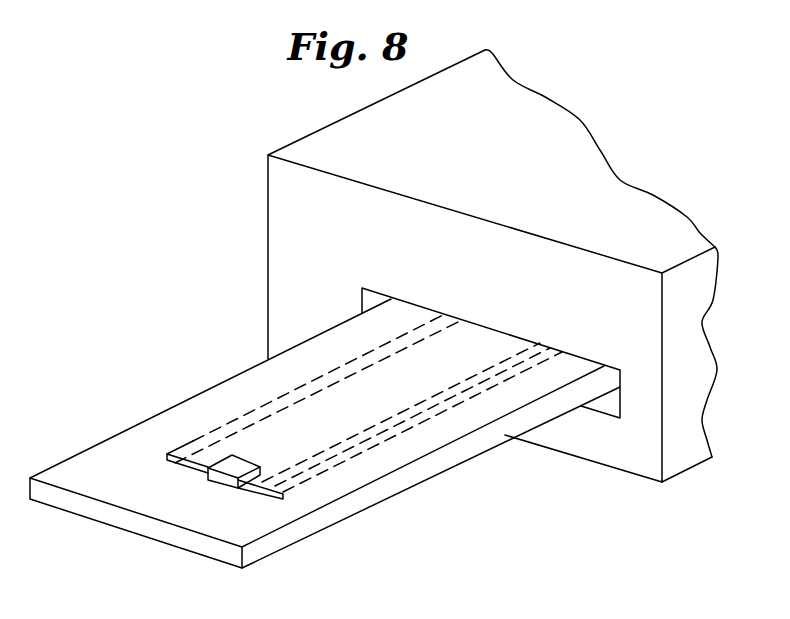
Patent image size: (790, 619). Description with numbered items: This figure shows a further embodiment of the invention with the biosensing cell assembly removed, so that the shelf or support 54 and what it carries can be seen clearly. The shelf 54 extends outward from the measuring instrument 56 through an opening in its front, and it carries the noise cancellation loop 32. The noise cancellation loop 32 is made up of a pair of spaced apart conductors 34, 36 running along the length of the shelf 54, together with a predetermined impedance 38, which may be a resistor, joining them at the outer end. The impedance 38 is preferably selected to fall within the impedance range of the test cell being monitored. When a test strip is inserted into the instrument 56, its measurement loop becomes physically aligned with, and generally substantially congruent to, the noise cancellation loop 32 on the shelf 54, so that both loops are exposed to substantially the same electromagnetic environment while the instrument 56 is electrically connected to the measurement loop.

The noise cancellation loop 32 is at (378, 405).
The conductor 34 is at (290, 390).
The conductor 36 is at (365, 455).
The predetermined impedance 38 is at (211, 479).
The shelf or support 54 is at (133, 537).
The measuring instrument 56 is at (306, 253).